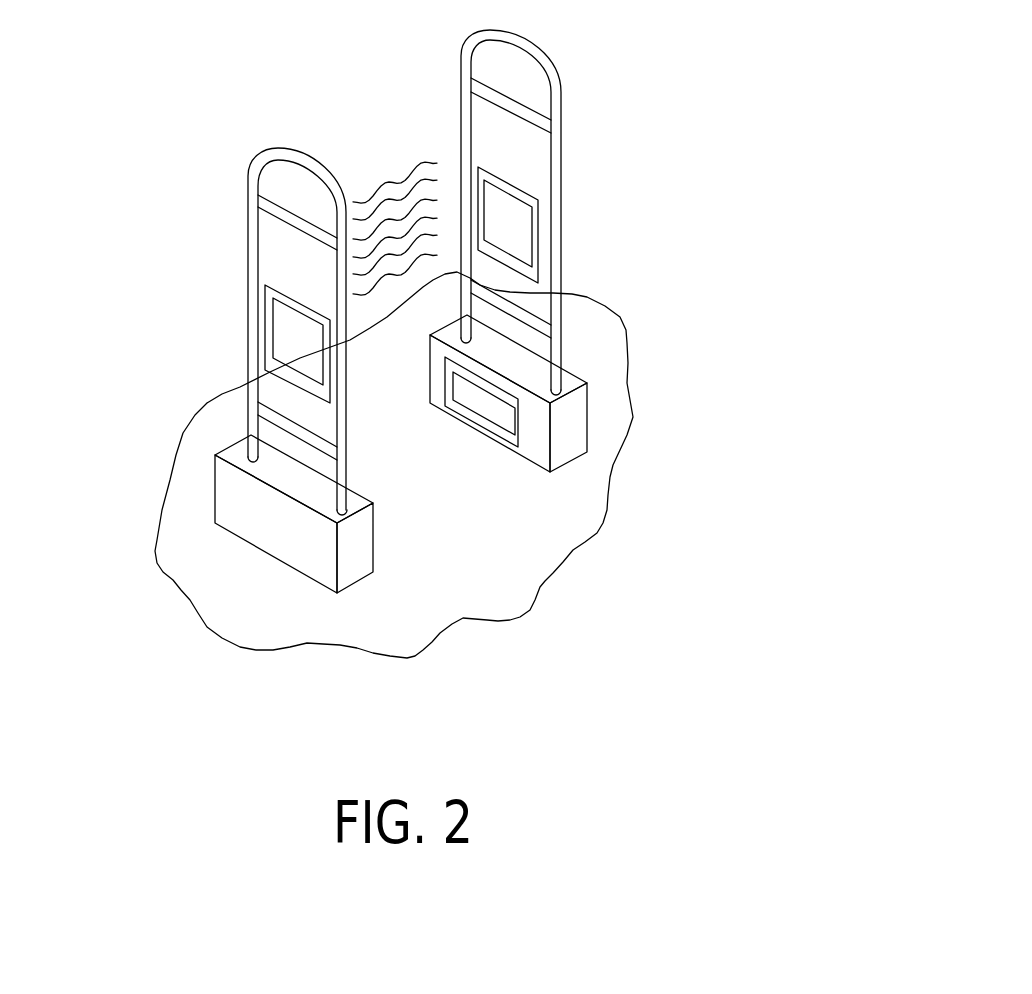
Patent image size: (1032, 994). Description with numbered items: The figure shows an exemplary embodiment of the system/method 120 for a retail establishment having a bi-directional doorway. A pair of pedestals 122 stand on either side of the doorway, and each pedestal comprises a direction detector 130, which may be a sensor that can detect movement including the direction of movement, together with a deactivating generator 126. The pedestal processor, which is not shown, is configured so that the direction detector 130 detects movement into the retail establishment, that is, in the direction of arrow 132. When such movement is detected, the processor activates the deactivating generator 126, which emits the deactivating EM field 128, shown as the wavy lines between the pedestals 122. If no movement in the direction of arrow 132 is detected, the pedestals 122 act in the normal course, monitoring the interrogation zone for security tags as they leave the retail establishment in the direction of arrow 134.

The system/method 120 is at (677, 392).
The pedestals 122 is at (250, 243).
The deactivating generator 126 is at (273, 346).
The deactivating EM field 128 is at (373, 167).
The direction detector 130 is at (587, 383).
The arrow 132 is at (435, 437).
The arrow 134 is at (567, 575).